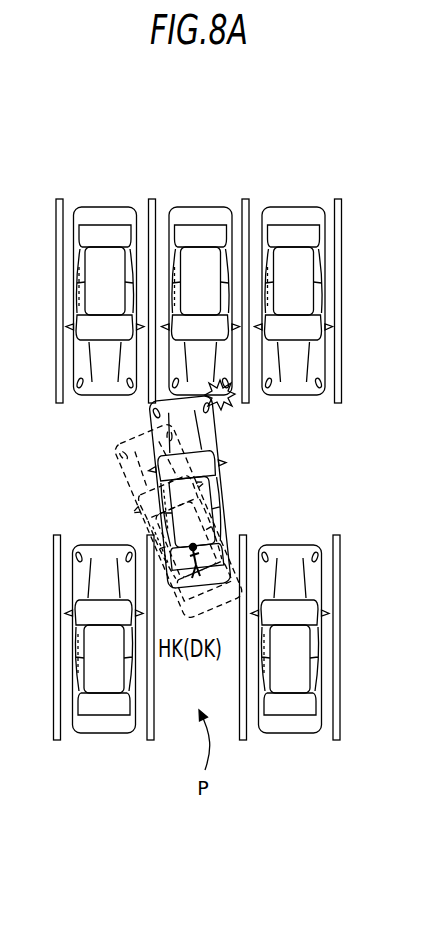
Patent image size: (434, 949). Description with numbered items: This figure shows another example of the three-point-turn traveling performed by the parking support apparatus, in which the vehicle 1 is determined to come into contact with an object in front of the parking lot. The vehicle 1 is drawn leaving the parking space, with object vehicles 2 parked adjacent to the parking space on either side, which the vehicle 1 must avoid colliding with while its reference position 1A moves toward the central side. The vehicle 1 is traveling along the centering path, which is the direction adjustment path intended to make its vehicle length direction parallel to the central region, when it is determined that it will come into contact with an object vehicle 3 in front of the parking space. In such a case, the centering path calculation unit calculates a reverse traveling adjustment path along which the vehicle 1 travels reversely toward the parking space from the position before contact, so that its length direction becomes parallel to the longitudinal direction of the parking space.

The vehicle 1 is at (221, 457).
The reference position 1A is at (205, 546).
The object vehicle 2 is at (95, 734).
The object vehicle 3 is at (202, 207).